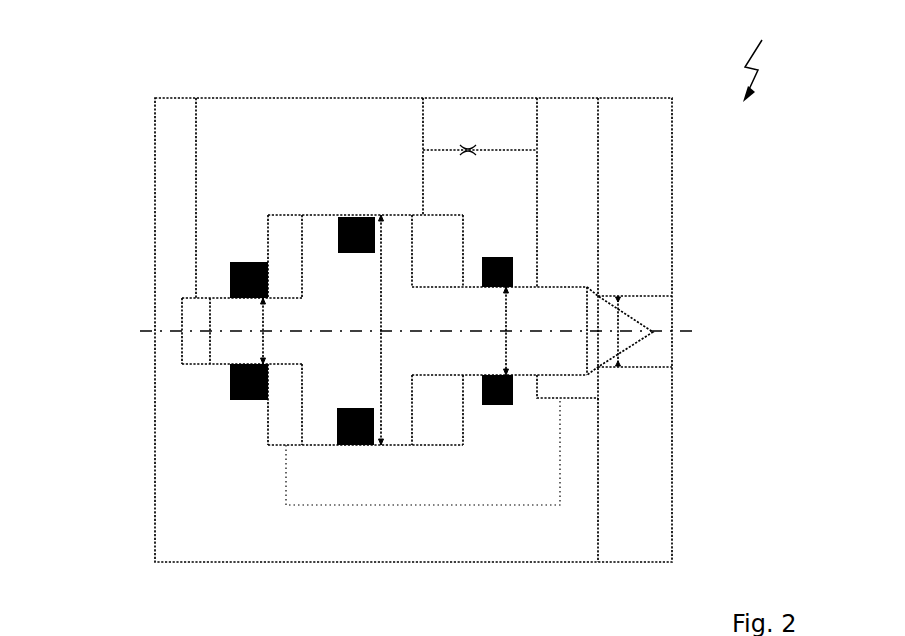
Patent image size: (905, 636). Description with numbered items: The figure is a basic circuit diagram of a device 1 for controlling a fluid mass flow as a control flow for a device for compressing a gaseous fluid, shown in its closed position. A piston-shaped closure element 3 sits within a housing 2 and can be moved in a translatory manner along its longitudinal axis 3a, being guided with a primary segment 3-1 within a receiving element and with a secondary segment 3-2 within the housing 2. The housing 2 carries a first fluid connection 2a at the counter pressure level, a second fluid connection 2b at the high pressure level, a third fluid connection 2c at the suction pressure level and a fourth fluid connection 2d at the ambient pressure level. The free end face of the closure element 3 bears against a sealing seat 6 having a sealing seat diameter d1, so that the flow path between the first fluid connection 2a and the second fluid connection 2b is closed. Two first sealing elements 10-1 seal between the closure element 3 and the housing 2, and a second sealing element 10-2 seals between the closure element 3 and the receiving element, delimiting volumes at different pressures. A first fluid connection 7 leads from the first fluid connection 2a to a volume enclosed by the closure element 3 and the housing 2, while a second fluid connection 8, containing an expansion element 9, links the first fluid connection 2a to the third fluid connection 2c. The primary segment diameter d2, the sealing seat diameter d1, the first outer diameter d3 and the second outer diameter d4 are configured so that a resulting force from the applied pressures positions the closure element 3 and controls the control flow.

The device 1 is at (757, 56).
The housing 2 is at (178, 478).
The first fluid connection 2a is at (279, 268).
The second fluid connection 2b is at (652, 354).
The third fluid connection 2c is at (423, 118).
The fourth fluid connection 2d is at (196, 120).
The closure element 3 is at (243, 342).
The longitudinal axis 3a is at (690, 332).
The primary segment 3-1 is at (555, 353).
The secondary segment 3-2 is at (321, 405).
The sealing seat 6 is at (598, 296).
The first fluid connection 7 is at (560, 505).
The second fluid connection 8 is at (510, 150).
The expansion element 9 is at (470, 146).
The first sealing elements 10-1 is at (243, 400).
The second sealing element 10-2 is at (498, 405).
The sealing seat diameter d1 is at (618, 322).
The primary segment diameter d2 is at (507, 317).
The first outer diameter d3 is at (382, 364).
The second outer diameter d4 is at (262, 322).